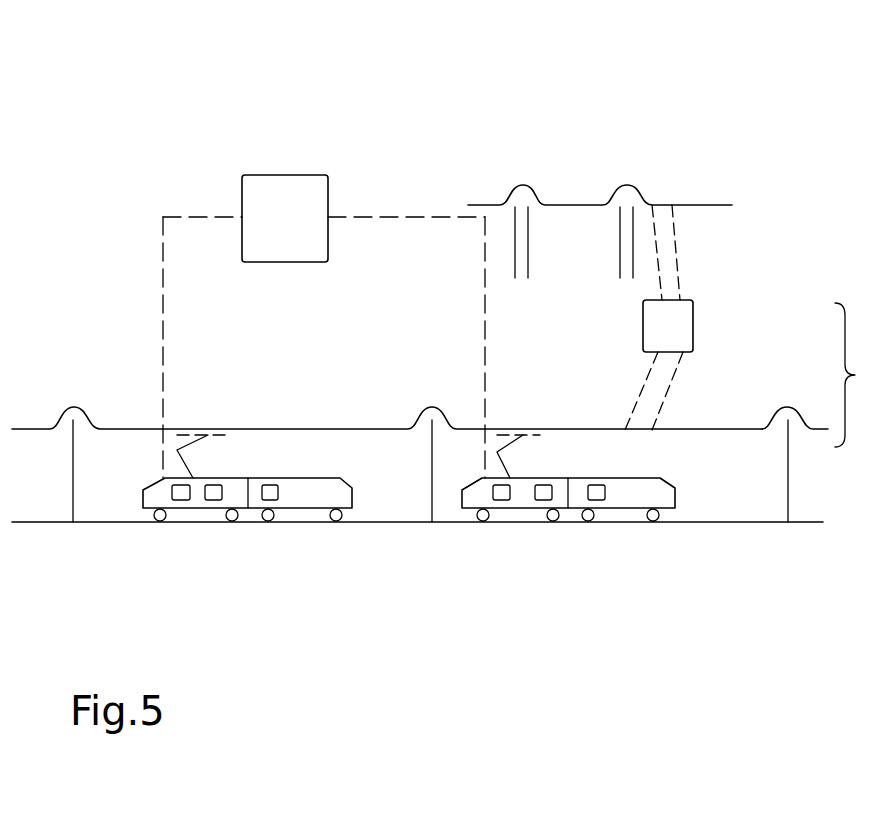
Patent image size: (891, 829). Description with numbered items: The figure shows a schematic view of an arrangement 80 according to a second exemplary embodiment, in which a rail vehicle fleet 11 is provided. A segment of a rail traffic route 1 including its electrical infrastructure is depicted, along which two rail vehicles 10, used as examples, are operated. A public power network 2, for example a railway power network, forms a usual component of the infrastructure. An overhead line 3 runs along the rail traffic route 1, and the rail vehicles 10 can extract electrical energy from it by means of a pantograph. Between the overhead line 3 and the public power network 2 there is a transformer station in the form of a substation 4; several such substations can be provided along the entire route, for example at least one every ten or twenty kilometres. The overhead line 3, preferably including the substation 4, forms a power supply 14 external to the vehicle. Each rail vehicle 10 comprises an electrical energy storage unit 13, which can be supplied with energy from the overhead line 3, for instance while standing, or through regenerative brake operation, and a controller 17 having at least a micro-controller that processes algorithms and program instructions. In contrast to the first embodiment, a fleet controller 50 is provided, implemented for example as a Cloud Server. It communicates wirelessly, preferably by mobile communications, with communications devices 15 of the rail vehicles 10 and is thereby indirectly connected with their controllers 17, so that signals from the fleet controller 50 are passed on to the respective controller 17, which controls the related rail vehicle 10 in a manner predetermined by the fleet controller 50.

The arrangement 80 is at (499, 109).
The public power network 2 is at (633, 174).
The fleet controller 50 is at (292, 173).
The substation 4 is at (695, 328).
The overhead line 3 is at (793, 394).
The power supply external to the vehicle 14 is at (859, 375).
The rail traffic route 1 is at (803, 525).
The rail vehicle fleet 11 is at (77, 572).
The rail vehicle 10 is at (157, 521).
The communications device 15 is at (181, 500).
The controller 17 is at (213, 500).
The electrical energy storage unit 13 is at (278, 505).